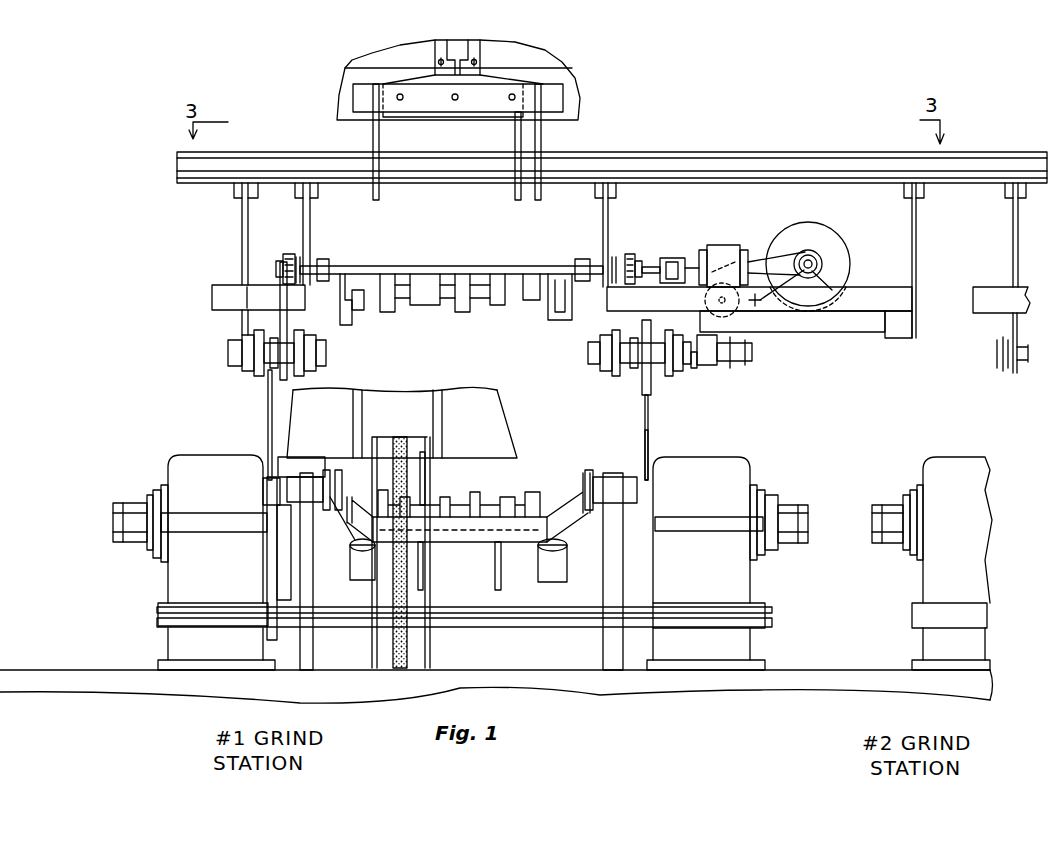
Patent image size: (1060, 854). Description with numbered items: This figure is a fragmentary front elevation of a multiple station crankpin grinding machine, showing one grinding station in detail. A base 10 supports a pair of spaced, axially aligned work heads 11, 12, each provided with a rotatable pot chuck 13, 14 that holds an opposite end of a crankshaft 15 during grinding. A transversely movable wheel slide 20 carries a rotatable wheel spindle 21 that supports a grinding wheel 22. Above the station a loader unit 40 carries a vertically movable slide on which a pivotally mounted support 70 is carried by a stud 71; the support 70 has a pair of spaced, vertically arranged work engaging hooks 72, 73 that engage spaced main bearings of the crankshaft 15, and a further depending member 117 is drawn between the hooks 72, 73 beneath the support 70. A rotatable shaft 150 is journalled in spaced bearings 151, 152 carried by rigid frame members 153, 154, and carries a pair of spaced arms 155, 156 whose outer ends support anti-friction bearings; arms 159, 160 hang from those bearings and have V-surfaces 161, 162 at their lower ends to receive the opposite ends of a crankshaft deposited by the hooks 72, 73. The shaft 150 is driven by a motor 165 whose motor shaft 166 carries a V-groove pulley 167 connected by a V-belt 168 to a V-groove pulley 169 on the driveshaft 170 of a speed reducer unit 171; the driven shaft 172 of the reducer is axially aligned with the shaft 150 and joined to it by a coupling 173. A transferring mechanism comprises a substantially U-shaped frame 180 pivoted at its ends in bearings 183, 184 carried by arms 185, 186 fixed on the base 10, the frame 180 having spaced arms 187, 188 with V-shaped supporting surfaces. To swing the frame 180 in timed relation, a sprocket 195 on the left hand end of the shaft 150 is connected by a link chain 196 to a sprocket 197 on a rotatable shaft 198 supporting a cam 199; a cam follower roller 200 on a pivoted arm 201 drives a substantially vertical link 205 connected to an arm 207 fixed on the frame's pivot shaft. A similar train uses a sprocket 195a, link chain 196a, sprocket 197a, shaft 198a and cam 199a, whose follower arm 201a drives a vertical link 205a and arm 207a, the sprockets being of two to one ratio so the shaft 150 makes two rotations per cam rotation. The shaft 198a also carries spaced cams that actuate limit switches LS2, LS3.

The base 10 is at (205, 680).
The work head 11 is at (200, 465).
The work head 12 is at (715, 470).
The pot chuck 13 is at (338, 562).
The pot chuck 14 is at (583, 560).
The crankshaft 15 is at (453, 315).
The wheel slide 20 is at (522, 470).
The wheel spindle 21 is at (425, 475).
The grinding wheel 22 is at (400, 436).
The loader unit 40 is at (520, 42).
The pivotally mounted support 70 is at (445, 100).
The stud 71 is at (435, 64).
The work engaging hook 72 is at (372, 136).
The work engaging hook 73 is at (542, 140).
The rod 117 is at (514, 140).
The rotatable shaft 150 is at (478, 265).
The bearing 151 is at (300, 255).
The bearing 152 is at (610, 255).
The rigid member 153 is at (258, 297).
The rigid member 154 is at (759, 312).
The arm 155 is at (325, 258).
The arm 156 is at (580, 258).
The arm 159 is at (350, 318).
The arm 160 is at (563, 321).
The V-surface 161 is at (366, 305).
The V-surface 162 is at (540, 303).
The motor 165 is at (830, 244).
The motor shaft 166 is at (808, 256).
The V-groove pulley 167 is at (810, 290).
The V-belt 168 is at (762, 258).
The V-groove pulley 169 is at (758, 300).
The driveshaft 170 is at (745, 312).
The speed reducer unit 171 is at (722, 246).
The driven shaft 172 is at (703, 249).
The coupling 173 is at (672, 257).
The U-shaped frame 180 is at (480, 542).
The bearing 183 is at (302, 476).
The bearing 184 is at (603, 476).
The arm 185 is at (313, 648).
The arm 186 is at (603, 643).
The arm 187 is at (424, 575).
The arm 188 is at (502, 580).
The sprocket 195 is at (289, 253).
The sprocket 195a is at (629, 253).
The link chain 196 is at (278, 270).
The link chain 196a is at (640, 260).
The sprocket 197 is at (287, 380).
The sprocket 197a is at (641, 378).
The rotatable shaft 198 is at (300, 360).
The rotatable shaft 198a is at (598, 365).
The cam 199 is at (242, 346).
The cam 199a is at (651, 380).
The cam follower roller 200 is at (233, 298).
The arm 201 is at (266, 362).
The arm 201a is at (660, 365).
The link 205 is at (268, 404).
The link 205a is at (675, 450).
The arm 207 is at (266, 503).
The arm 207a is at (660, 508).
The limit switch LS2 is at (700, 370).
The limit switch LS3 is at (735, 360).